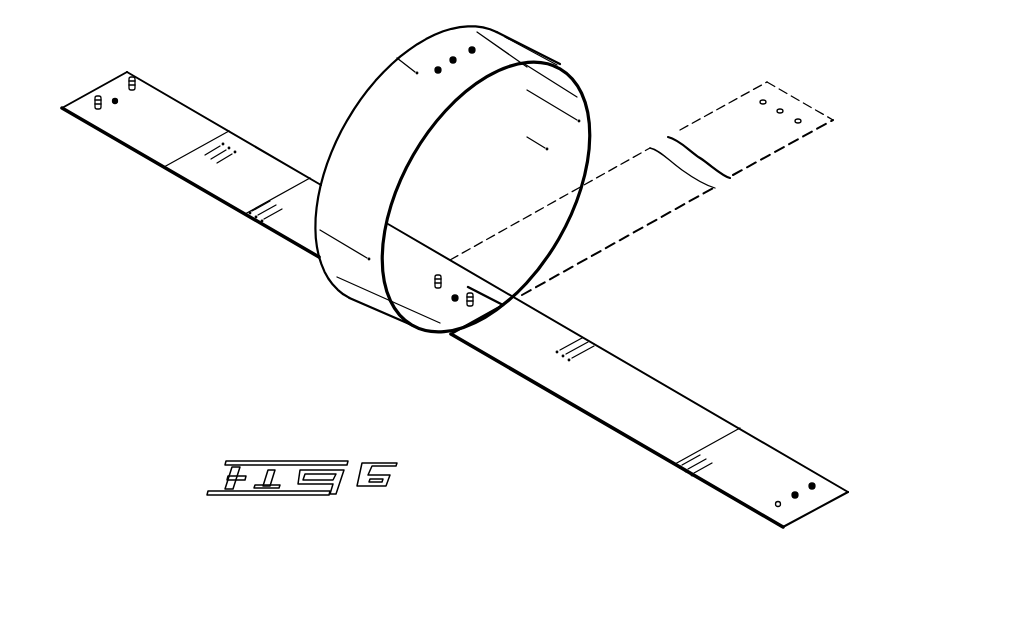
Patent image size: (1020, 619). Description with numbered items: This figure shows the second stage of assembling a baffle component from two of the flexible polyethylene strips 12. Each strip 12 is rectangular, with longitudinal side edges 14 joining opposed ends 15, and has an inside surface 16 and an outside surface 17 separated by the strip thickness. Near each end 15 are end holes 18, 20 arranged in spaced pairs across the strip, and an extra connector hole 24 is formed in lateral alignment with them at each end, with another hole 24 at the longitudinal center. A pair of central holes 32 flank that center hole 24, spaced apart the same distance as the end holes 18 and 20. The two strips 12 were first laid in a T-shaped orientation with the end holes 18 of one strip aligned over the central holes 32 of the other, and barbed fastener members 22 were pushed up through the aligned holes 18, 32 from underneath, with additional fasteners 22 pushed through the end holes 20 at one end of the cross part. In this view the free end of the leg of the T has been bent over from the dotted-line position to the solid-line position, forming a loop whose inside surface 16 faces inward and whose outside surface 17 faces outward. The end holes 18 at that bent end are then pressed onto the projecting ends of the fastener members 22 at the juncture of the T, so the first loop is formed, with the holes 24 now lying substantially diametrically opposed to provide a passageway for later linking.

The elongated strip 12 is at (333, 277).
The longitudinal side edges 14 is at (346, 121).
The opposed ends 15 is at (78, 104).
The inside surface 16 is at (537, 164).
The outside surface 17 is at (508, 50).
The end holes 18 is at (810, 486).
The end holes 20 is at (100, 114).
The fastener members 22 is at (131, 77).
The extra hole 24 is at (451, 59).
The central holes 32 is at (441, 70).